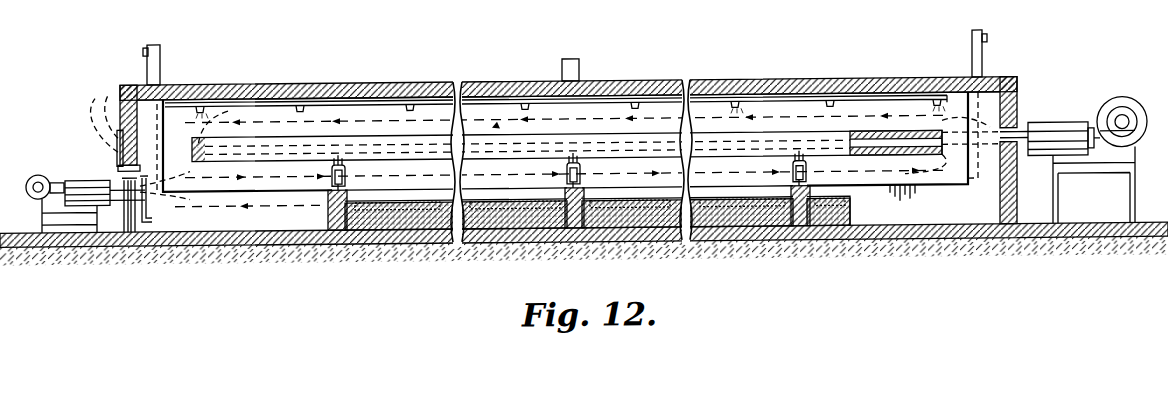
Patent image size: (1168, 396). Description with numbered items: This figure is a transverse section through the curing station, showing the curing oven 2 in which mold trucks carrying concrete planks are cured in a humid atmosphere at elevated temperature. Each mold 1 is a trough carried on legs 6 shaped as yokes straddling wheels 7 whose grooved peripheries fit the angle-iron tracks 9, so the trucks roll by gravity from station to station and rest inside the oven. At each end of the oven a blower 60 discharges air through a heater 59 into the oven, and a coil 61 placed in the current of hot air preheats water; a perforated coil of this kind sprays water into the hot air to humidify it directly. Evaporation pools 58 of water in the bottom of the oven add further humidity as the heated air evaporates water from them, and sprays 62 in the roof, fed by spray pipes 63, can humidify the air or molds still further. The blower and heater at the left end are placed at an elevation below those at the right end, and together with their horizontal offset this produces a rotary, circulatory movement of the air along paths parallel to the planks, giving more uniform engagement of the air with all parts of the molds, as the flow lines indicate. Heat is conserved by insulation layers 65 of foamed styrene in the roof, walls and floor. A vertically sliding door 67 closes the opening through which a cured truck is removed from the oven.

The mold 1 is at (498, 130).
The curing oven 2 is at (520, 88).
The legs 6 is at (350, 176).
The wheels 7 is at (332, 185).
The tracks 9 is at (330, 197).
The evaporation pools 58 is at (532, 206).
The heater 59 is at (80, 180).
The blowers 60 is at (38, 174).
The coil 61 is at (150, 205).
The sprays 62 is at (298, 107).
The spray pipes 63 is at (352, 103).
The insulation layers 65 is at (421, 97).
The vertically sliding door 67 is at (870, 134).